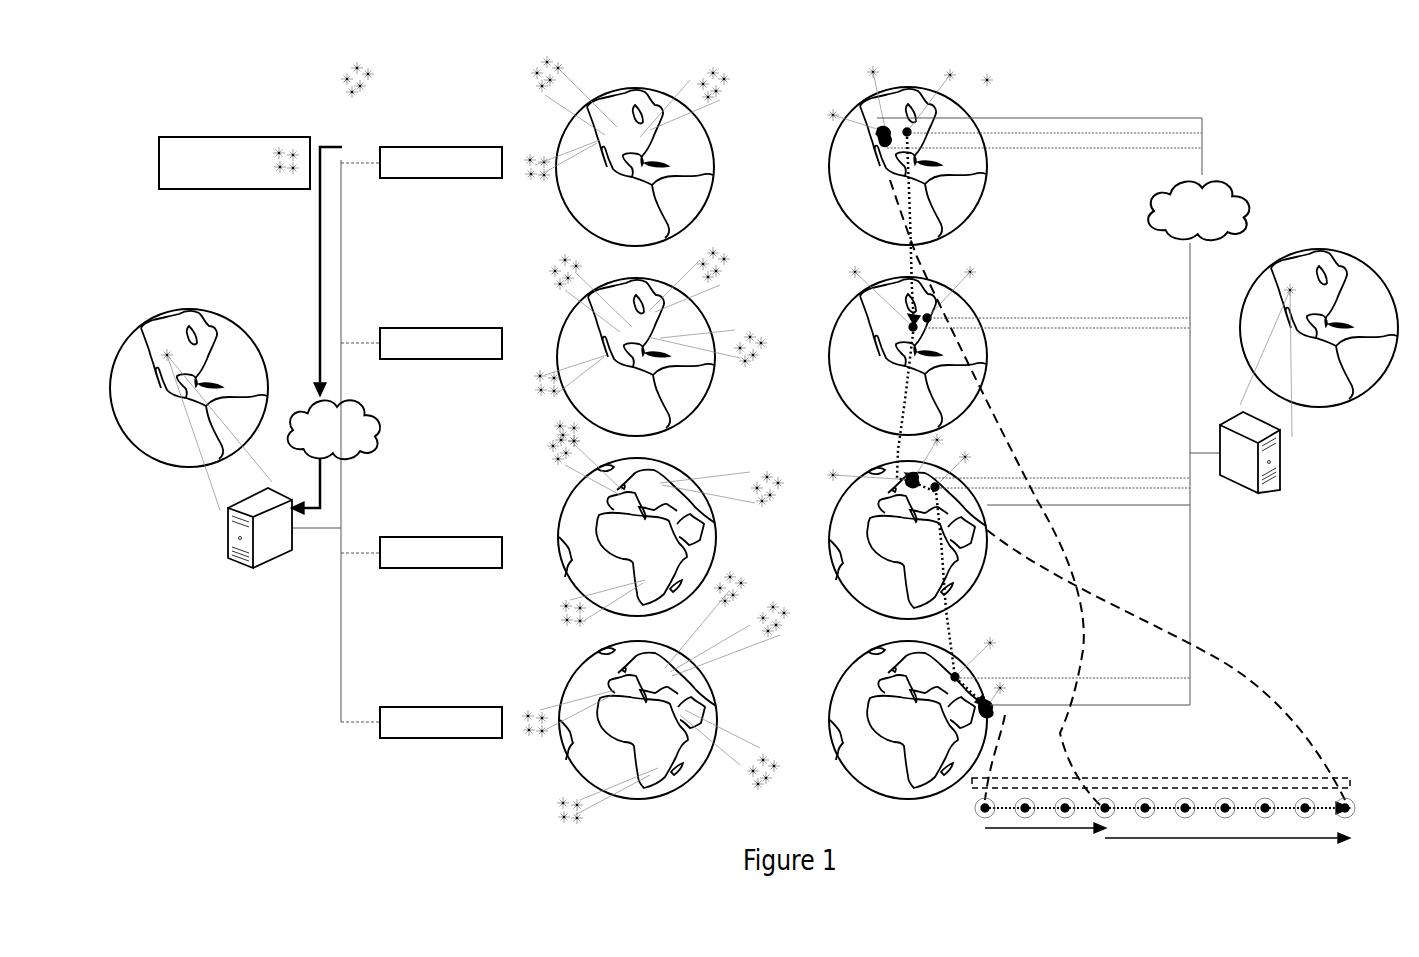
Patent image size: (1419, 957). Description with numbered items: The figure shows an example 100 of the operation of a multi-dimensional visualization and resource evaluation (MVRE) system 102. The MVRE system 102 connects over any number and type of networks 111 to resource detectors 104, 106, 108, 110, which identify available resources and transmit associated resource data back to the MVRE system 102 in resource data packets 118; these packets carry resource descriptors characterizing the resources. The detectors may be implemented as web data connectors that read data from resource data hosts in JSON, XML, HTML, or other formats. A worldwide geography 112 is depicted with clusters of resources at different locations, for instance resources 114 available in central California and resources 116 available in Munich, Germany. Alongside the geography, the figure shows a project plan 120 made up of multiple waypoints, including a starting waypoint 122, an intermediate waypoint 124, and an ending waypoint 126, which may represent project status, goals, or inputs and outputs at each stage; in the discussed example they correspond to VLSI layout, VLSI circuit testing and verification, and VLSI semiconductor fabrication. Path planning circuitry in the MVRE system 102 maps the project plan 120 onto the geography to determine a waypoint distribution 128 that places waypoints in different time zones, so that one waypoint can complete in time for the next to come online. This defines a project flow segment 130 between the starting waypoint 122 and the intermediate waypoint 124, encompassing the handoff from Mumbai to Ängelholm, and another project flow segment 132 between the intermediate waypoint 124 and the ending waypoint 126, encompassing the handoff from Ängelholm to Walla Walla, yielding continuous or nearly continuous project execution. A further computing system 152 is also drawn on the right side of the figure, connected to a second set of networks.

The example of the operation of the MVRE system 100 is at (147, 84).
The MVRE system 102 is at (270, 545).
The resource detector 104 is at (441, 162).
The resource detector 106 is at (441, 343).
The resource detector 108 is at (441, 552).
The resource detector 110 is at (441, 722).
The networks 111 is at (360, 445).
The worldwide geography 112 is at (532, 796).
The resources 114 is at (525, 150).
The resources 116 is at (539, 454).
The resource data packets 118 is at (218, 189).
The project plan 120 is at (1240, 808).
The starting waypoint 122 is at (985, 818).
The intermediate waypoint 124 is at (1105, 818).
The ending waypoint 126 is at (1348, 818).
The waypoint distribution 128 is at (1350, 780).
The project flow segment 130 is at (1050, 829).
The project flow segment 132 is at (1178, 839).
The remote computing system 152 is at (1268, 490).